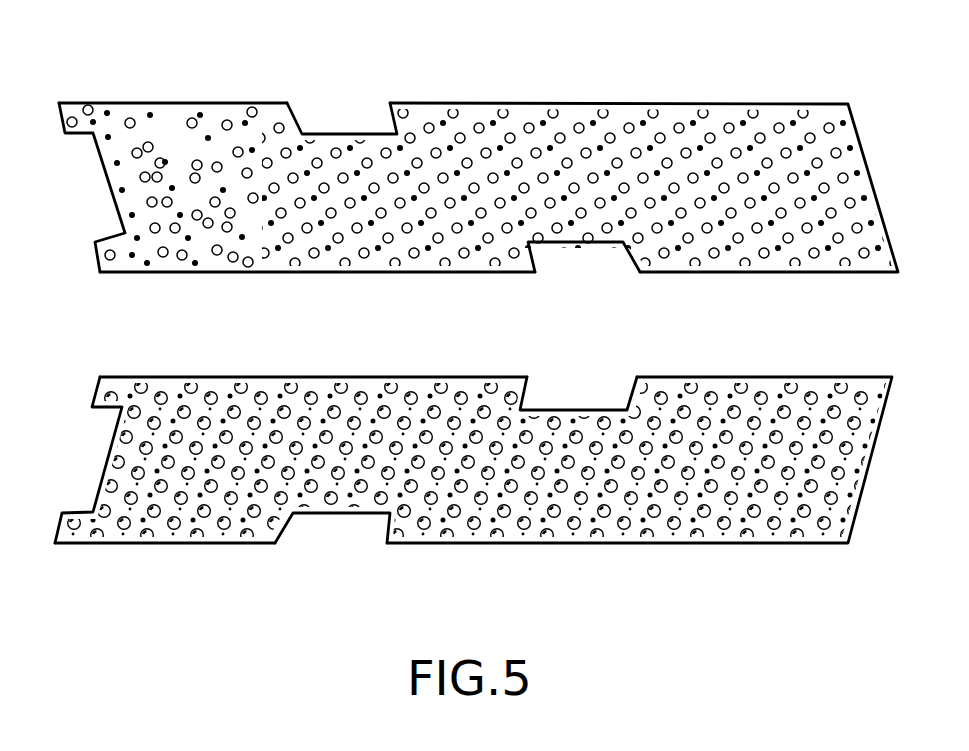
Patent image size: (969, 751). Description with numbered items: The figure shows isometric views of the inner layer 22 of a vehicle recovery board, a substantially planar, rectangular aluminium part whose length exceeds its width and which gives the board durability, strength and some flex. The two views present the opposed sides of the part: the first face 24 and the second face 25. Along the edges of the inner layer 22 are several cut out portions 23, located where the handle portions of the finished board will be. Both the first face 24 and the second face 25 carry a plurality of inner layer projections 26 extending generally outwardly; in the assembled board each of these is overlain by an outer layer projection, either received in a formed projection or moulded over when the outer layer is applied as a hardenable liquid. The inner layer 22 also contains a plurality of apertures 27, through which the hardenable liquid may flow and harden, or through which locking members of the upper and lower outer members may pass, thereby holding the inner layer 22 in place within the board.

The inner layer 22 is at (110, 355).
The cut out portions 23 is at (88, 178).
The first face 24 is at (720, 546).
The second face 25 is at (597, 103).
The inner layer projections 26 is at (197, 162).
The apertures 27 is at (165, 443).